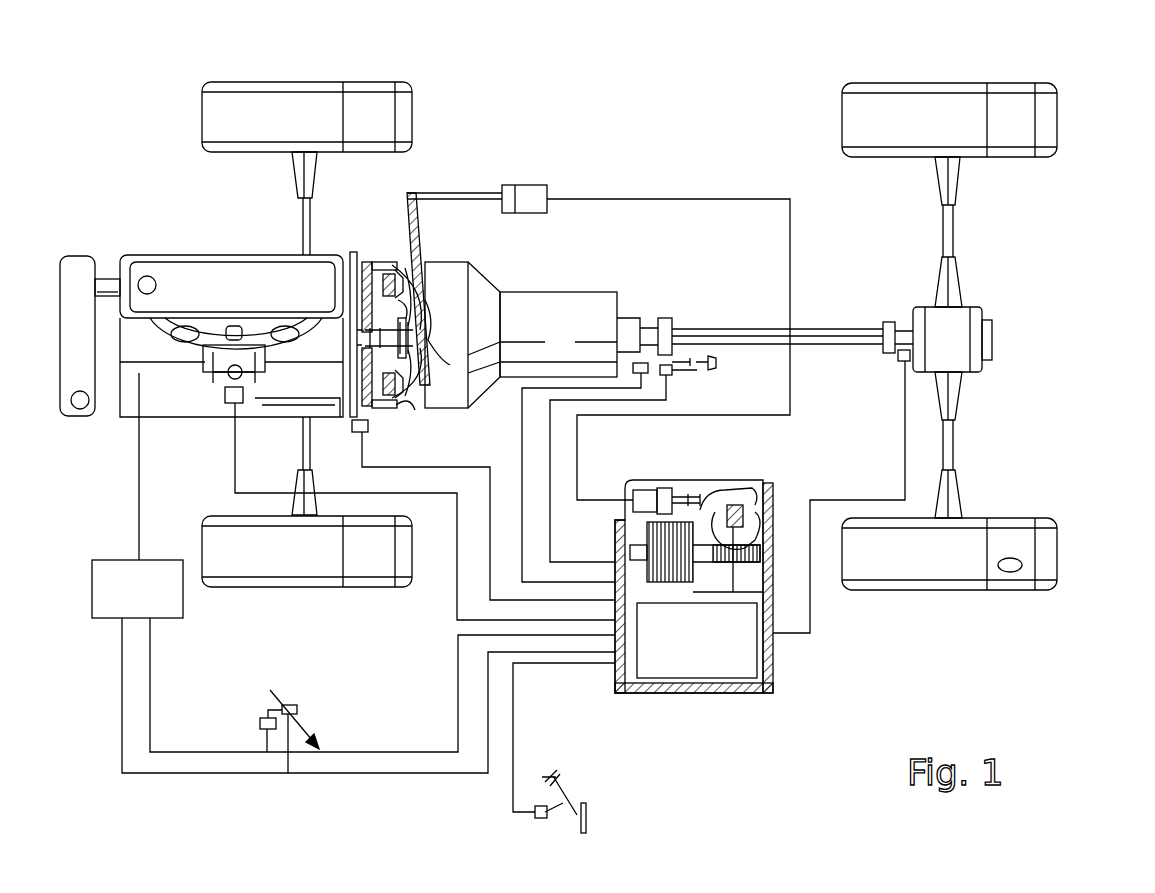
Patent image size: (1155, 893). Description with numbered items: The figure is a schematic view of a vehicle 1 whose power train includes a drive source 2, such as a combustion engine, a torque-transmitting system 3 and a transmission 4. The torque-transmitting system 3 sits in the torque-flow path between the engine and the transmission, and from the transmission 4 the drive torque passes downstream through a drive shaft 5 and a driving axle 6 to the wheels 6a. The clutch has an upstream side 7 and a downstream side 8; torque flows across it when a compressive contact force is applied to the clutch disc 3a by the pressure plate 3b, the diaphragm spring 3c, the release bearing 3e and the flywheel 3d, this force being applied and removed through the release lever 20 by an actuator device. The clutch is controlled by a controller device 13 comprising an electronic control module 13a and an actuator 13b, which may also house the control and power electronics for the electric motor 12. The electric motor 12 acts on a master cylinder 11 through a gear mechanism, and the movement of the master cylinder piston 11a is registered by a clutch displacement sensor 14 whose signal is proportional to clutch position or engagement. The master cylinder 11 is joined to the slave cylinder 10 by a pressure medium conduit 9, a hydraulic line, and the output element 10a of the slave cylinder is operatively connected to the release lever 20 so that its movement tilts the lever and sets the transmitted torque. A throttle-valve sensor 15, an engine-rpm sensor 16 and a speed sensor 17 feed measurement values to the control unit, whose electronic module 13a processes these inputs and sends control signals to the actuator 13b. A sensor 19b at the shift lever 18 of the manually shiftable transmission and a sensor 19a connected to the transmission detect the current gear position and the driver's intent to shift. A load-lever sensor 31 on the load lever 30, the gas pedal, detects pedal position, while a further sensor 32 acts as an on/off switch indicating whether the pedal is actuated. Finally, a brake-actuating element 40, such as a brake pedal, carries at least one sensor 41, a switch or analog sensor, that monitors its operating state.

The vehicle 1 is at (660, 98).
The drive source 2 is at (175, 275).
The torque-transmitting system 3 is at (427, 331).
The clutch disc 3a is at (410, 402).
The pressure plate 3b is at (392, 262).
The diaphragm spring 3c is at (426, 331).
The flywheel 3d is at (372, 405).
The release bearing 3e is at (432, 345).
The transmission 4 is at (567, 350).
The drive shaft 5 is at (830, 330).
The driving axle 6 is at (953, 450).
The wheels 6a is at (1025, 122).
The upstream side 7 is at (352, 262).
The downstream side 8 is at (440, 262).
The pressure medium conduit 9 is at (612, 199).
The slave cylinder 10 is at (530, 185).
The output element of the slave cylinder 10a is at (462, 192).
The master cylinder 11 is at (645, 490).
The master cylinder piston 11a is at (668, 488).
The electric motor 12 is at (640, 548).
The controller device 13 is at (612, 672).
The electronic control module 13a is at (715, 658).
The actuator 13b is at (745, 478).
The clutch displacement sensor 14 is at (745, 512).
The throttle-valve sensor 15 is at (225, 400).
The engine-rpm sensor 16 is at (350, 432).
The speed sensor 17 is at (898, 362).
The shift lever 18 is at (668, 345).
The sensor 19a is at (640, 362).
The sensor 19b is at (672, 372).
The release lever 20 is at (418, 212).
The load lever 30 is at (272, 690).
The load-lever sensor 31 is at (265, 718).
The sensor 32 is at (297, 707).
The brake-actuating element 40 is at (153, 602).
The sensor 41 is at (535, 815).